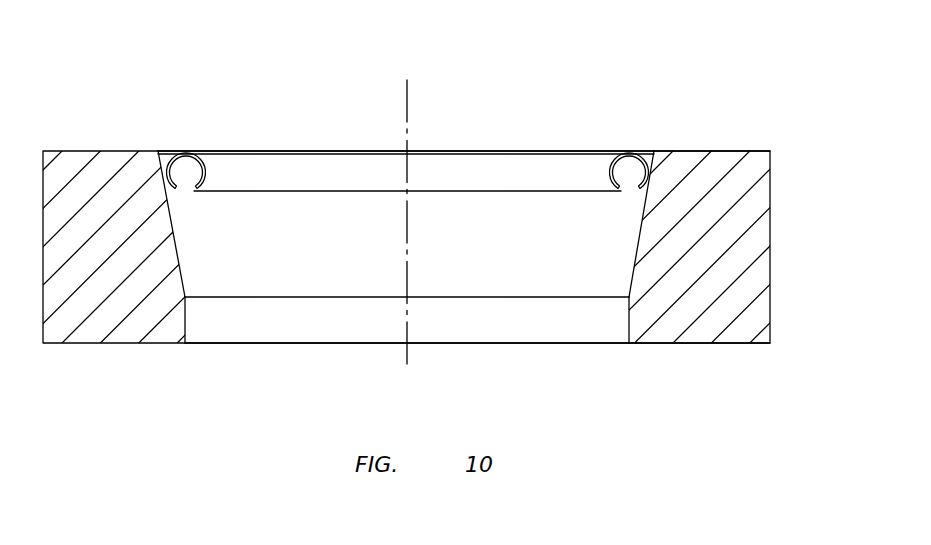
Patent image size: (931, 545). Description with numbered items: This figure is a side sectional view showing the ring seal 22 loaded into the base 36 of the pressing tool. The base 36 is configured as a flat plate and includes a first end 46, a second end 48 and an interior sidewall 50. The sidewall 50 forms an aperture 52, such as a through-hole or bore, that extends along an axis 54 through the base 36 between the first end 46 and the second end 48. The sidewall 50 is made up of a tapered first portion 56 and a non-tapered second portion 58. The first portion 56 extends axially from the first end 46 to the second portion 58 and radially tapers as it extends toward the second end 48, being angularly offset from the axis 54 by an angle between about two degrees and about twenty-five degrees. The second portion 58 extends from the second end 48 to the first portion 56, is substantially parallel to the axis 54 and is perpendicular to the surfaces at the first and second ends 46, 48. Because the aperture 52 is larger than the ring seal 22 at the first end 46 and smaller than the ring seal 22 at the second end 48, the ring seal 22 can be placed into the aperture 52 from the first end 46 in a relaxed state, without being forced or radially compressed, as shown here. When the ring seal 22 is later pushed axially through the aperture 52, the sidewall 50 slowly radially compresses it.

The ring seal 22 is at (490, 150).
The base 36 is at (770, 228).
The first end 46 is at (713, 151).
The second end 48 is at (683, 343).
The interior sidewall 50 is at (283, 327).
The aperture 52 is at (435, 307).
The axis 54 is at (405, 88).
The tapered first portion 56 is at (180, 268).
The non-tapered second portion 58 is at (185, 322).